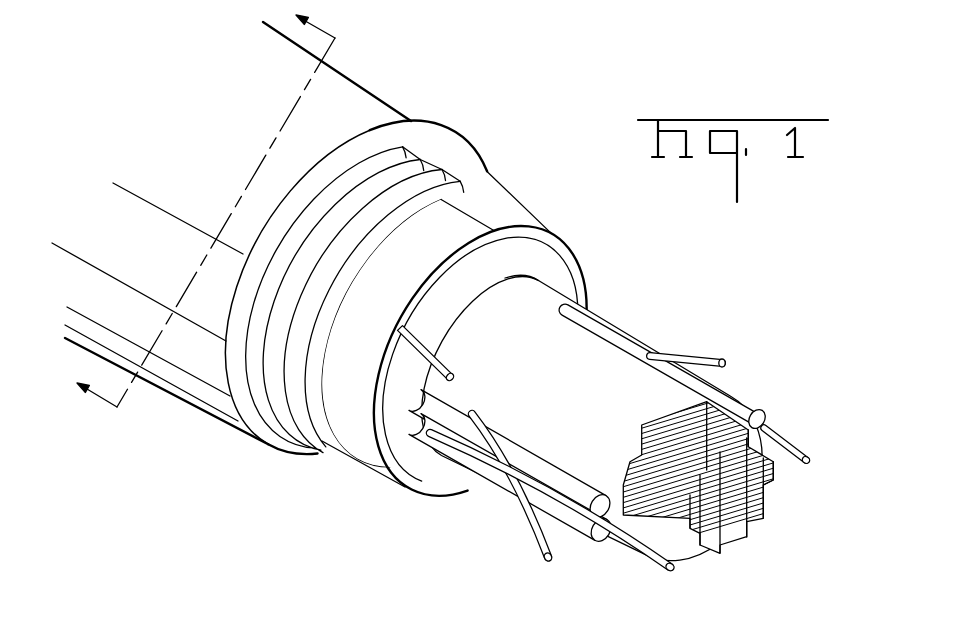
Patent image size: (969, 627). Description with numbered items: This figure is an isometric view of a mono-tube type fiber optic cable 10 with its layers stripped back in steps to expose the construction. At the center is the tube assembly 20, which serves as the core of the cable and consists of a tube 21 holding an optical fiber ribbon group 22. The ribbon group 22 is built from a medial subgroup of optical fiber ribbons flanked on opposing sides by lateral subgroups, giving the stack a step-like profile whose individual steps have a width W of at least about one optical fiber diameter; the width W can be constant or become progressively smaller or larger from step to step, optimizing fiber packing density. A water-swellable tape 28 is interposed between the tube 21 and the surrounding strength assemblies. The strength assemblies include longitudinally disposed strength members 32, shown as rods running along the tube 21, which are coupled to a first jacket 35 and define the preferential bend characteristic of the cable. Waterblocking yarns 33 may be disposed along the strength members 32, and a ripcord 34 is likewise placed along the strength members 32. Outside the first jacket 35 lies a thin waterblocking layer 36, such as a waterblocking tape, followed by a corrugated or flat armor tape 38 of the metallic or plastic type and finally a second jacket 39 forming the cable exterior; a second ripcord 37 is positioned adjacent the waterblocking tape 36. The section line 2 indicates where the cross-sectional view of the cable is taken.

The fiber optic cable 10 is at (417, 68).
The section line 2- 2 is at (193, 203).
The tube assembly 20 is at (621, 361).
The tube 21 is at (637, 367).
The optical fiber ribbon group 22 is at (717, 424).
The width W is at (772, 489).
The water-swellable tape 28 is at (541, 287).
The strength members 32 is at (605, 532).
The waterblocking yarns 33 is at (675, 567).
The ripcord 34 is at (518, 498).
The first jacket 35 is at (424, 458).
The waterblocking layer 36 is at (382, 473).
The ripcord 37 is at (448, 367).
The armor tape 38 is at (320, 457).
The second jacket 39 is at (243, 412).